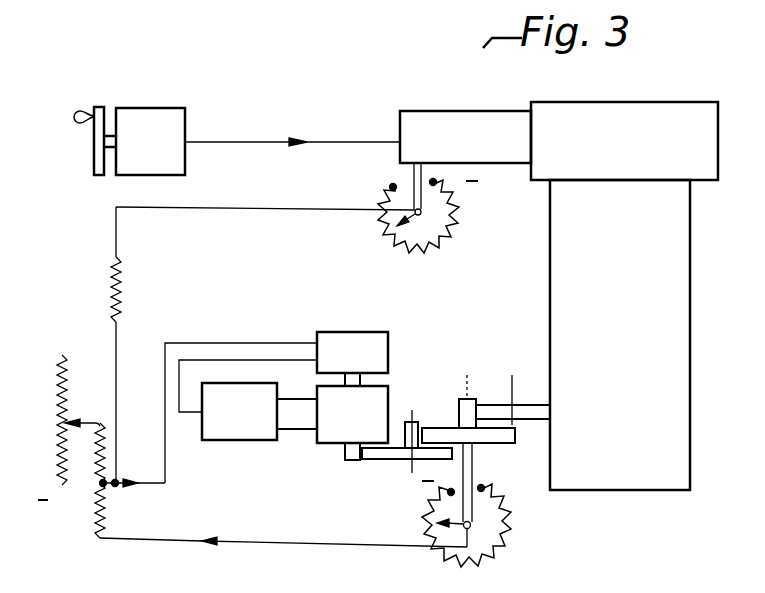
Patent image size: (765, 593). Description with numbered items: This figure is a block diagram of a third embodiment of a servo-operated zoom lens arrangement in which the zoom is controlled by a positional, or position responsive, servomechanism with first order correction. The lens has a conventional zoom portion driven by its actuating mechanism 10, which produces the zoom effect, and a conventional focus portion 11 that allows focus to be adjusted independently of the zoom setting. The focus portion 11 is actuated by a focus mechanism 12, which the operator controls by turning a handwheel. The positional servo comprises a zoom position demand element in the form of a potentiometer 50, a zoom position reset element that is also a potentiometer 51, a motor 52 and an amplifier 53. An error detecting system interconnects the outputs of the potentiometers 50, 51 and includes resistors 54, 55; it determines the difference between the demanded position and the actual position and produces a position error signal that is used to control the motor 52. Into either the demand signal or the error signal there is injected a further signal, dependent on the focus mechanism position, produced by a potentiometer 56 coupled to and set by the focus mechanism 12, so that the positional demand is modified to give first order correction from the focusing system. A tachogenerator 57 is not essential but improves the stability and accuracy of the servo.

The zoom portion actuating mechanism 10 is at (609, 350).
The focus portion 11 is at (615, 152).
The focus mechanism 12 is at (472, 152).
The zoom position demand potentiometer 50 is at (55, 413).
The zoom position reset potentiometer 51 is at (490, 545).
The motor 52 is at (342, 425).
The amplifier 53 is at (230, 422).
The resistor 54 is at (105, 455).
The resistor 55 is at (110, 523).
The focus position potentiometer 56 is at (428, 237).
The tachogenerator 57 is at (342, 362).